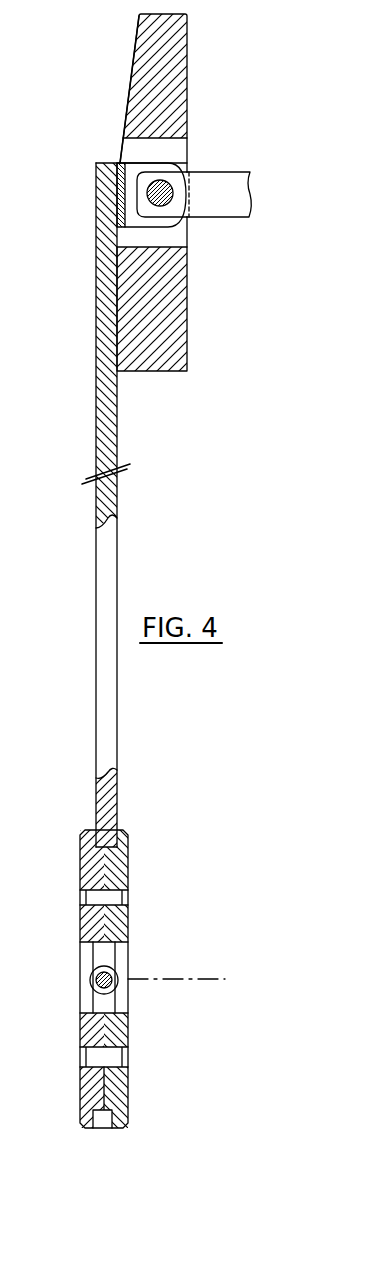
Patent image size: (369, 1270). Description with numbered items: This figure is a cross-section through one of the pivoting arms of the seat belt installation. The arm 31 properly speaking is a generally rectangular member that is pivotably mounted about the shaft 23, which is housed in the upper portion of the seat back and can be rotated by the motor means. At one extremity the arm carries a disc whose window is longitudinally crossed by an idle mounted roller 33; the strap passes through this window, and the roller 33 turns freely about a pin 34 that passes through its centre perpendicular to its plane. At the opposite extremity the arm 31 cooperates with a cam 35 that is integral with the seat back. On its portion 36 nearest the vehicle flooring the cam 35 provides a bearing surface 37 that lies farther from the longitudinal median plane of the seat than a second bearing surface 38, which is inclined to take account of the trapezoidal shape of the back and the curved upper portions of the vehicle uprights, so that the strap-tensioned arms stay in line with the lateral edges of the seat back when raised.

The shaft 23 is at (229, 188).
The arm properly speaking 31 is at (103, 552).
The idle mounted roller 33 is at (86, 980).
The pin 34 is at (208, 978).
The cam 35 is at (191, 106).
The portion of the cam 36 is at (167, 303).
The bearing surface 37 is at (113, 343).
The inclined bearing surface 38 is at (131, 62).